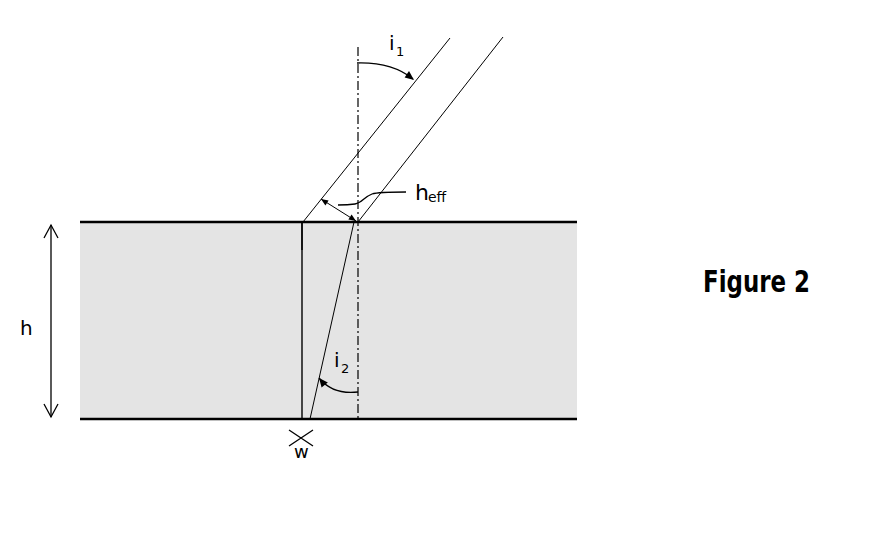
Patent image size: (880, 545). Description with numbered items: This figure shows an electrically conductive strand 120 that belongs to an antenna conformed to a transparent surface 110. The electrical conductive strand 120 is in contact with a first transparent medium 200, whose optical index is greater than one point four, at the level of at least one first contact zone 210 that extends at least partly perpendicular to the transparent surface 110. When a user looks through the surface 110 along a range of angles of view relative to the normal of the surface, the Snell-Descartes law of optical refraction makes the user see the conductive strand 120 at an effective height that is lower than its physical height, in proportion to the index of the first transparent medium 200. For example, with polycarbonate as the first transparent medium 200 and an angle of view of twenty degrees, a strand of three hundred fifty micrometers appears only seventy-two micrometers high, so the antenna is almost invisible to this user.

The transparent surface 110 is at (532, 420).
The electrical conductive strand 120 is at (299, 248).
The first transparent medium 200 is at (127, 392).
The first contact zone 210 is at (300, 356).